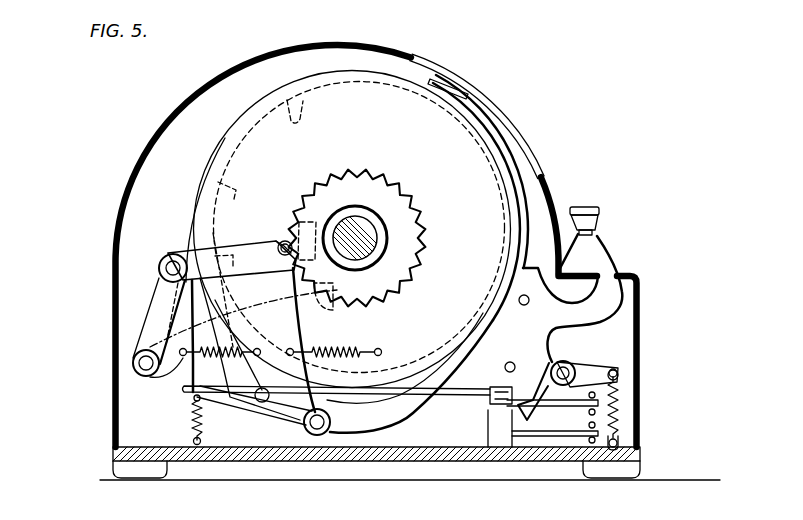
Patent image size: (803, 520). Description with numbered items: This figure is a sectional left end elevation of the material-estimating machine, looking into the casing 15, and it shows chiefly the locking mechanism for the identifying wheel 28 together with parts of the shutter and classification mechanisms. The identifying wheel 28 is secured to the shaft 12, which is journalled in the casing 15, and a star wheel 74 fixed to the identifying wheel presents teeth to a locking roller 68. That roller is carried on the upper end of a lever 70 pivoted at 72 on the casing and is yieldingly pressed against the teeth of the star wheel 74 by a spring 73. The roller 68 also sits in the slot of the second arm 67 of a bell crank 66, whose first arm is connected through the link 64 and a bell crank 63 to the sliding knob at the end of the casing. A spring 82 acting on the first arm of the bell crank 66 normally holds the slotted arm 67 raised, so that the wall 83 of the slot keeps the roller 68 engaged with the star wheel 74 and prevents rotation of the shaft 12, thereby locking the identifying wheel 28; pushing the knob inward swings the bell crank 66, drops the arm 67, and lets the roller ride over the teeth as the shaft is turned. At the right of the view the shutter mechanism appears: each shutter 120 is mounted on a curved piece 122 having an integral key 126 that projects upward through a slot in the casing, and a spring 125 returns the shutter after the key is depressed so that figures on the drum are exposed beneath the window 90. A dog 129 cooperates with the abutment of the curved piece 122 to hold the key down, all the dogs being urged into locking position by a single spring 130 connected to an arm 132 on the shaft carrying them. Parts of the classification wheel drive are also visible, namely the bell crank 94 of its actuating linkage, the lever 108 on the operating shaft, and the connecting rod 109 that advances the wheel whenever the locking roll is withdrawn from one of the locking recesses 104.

The casing 15 is at (338, 43).
The locking recesses 104 is at (290, 116).
The window 90 is at (455, 86).
The shutters 120 is at (490, 129).
The identifying wheel 28 is at (235, 144).
The second arm 67 is at (240, 250).
The locking roller 68 is at (283, 242).
The wall 83 is at (274, 244).
The star wheel 74 is at (430, 186).
The shaft 12 is at (380, 233).
The key 126 is at (600, 224).
The lever 108 is at (155, 308).
The lever 70 is at (275, 304).
The bell crank 66 is at (165, 332).
The spring 73 is at (370, 349).
The dog 129 is at (560, 368).
The arm 132 is at (600, 367).
The connecting rod 109 is at (178, 380).
The link 64 is at (382, 388).
The spring 130 is at (613, 408).
The spring 125 is at (190, 422).
The spring 82 is at (215, 393).
The pivot 72 is at (314, 436).
The curved piece 122 is at (360, 434).
The bell crank 63 is at (512, 447).
The bell crank 94 is at (576, 470).